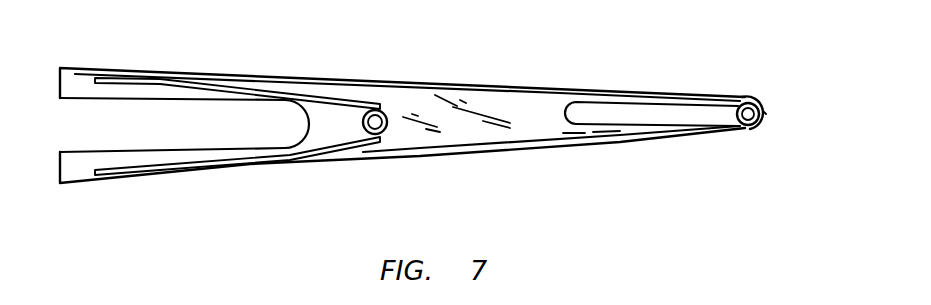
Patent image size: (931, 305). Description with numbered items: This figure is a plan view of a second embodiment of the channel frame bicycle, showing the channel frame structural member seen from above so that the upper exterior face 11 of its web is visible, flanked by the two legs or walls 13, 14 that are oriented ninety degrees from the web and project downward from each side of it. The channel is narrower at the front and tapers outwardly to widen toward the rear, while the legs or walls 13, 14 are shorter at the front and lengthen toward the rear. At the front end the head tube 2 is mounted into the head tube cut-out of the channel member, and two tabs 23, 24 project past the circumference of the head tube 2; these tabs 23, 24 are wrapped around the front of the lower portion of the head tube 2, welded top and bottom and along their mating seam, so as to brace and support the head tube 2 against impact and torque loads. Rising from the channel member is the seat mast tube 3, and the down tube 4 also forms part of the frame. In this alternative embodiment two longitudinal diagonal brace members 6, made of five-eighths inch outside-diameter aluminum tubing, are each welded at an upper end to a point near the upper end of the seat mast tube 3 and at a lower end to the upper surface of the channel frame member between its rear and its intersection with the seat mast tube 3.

The head tube 2 is at (757, 127).
The seat mast tube 3 is at (387, 118).
The down tube 4 is at (642, 114).
The longitudinal diagonal brace members 6 is at (311, 96).
The upper exterior face 11 is at (518, 100).
The leg or wall 13 is at (660, 91).
The leg or wall 14 is at (545, 150).
The tab 23 is at (745, 97).
The tab 24 is at (769, 115).